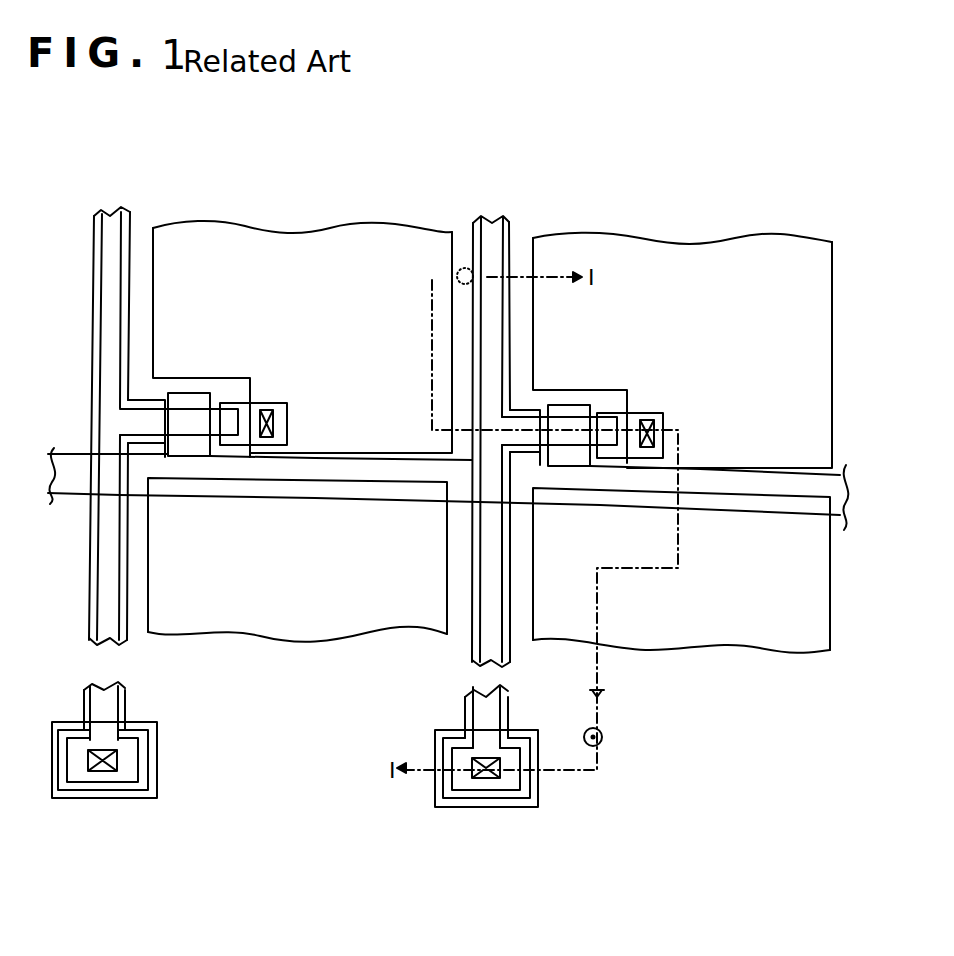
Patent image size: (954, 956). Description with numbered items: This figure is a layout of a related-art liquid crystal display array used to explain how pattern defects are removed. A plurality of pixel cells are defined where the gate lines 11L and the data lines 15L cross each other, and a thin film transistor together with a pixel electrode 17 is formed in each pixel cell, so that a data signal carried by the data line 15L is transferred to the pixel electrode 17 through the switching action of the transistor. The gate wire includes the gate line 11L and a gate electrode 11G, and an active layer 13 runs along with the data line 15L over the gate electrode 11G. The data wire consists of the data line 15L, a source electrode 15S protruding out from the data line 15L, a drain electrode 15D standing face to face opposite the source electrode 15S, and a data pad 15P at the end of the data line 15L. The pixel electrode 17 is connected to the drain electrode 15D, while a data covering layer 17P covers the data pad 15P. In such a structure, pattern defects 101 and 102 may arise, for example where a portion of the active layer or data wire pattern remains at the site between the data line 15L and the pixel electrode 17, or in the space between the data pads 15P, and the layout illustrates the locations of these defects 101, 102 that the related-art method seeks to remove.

The pixel electrode 17 is at (320, 226).
The active layer 13 is at (492, 224).
The data line 15L is at (512, 232).
The gate line 11L is at (848, 478).
The source electrode 15S is at (562, 412).
The gate electrode 11G is at (620, 406).
The drain electrode 15D is at (663, 414).
The pattern defect 101 is at (452, 277).
The pattern defect 102 is at (602, 733).
The data pad 15P is at (483, 802).
The data covering layer 17P is at (531, 807).